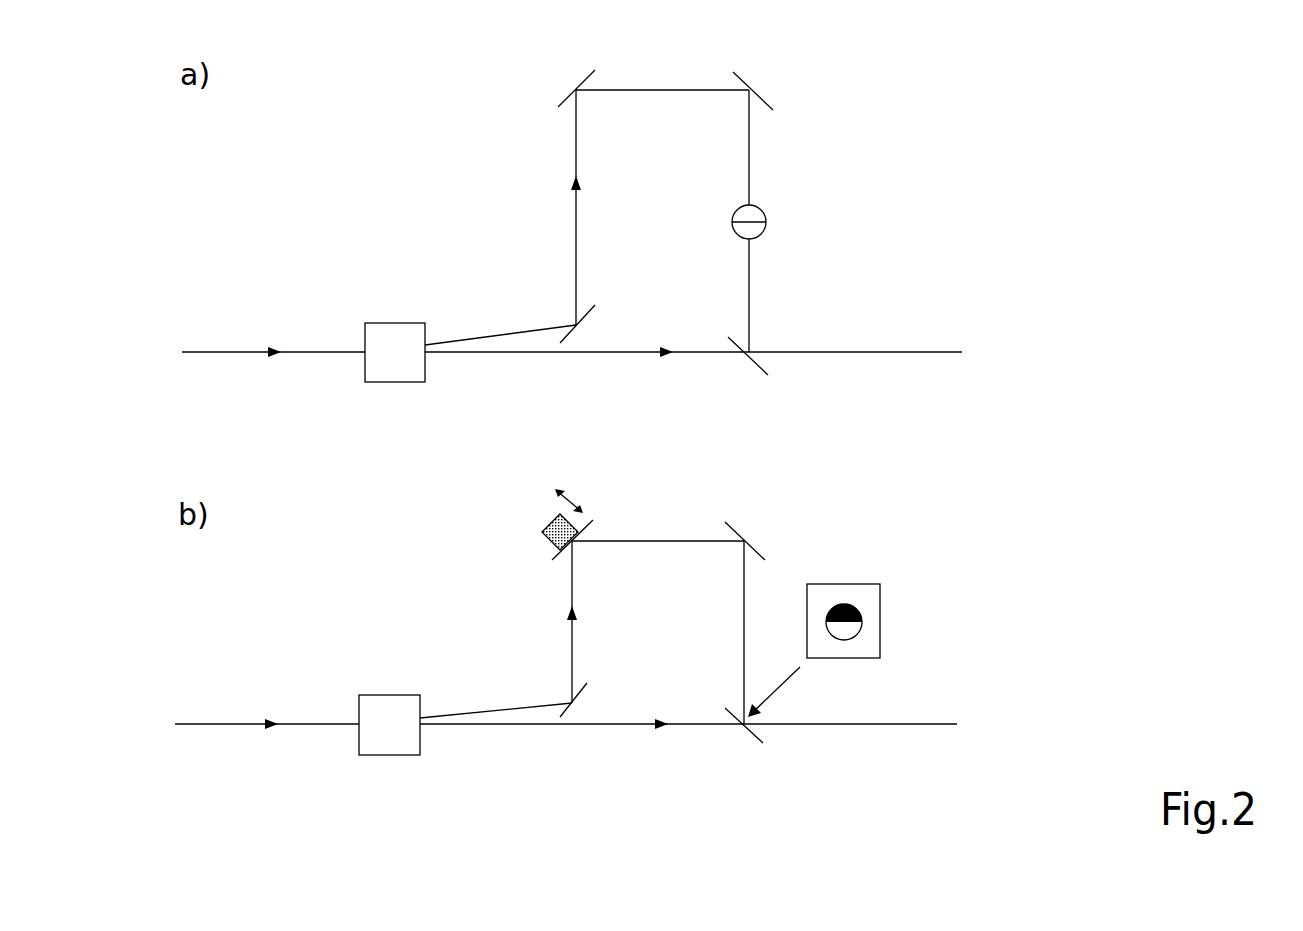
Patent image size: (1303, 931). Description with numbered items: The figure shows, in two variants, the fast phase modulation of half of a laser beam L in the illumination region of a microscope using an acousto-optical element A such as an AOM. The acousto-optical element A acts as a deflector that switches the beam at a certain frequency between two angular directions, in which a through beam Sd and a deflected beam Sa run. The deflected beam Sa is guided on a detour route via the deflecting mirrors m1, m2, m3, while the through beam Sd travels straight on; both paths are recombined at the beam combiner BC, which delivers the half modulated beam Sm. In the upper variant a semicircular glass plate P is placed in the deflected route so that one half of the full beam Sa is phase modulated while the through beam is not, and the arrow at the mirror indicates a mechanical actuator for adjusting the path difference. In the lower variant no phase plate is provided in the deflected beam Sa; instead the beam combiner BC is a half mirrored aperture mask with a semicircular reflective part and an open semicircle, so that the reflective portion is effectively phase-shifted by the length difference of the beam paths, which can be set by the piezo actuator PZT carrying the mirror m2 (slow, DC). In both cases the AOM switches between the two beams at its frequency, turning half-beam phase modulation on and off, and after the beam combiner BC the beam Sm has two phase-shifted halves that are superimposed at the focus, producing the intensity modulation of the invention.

The laser beam L is at (270, 513).
The acousto-optical element A is at (392, 565).
The through beam Sd is at (584, 565).
The deflected beam Sa is at (539, 396).
The deflecting mirror m1 is at (534, 505).
The deflecting mirror m2 is at (646, 284).
The deflecting mirror m3 is at (781, 372).
The semicircular glass plate P is at (778, 269).
The piezo actuator PZT is at (529, 520).
The beam combiner BC is at (800, 571).
The half modulated beam Sm is at (892, 499).